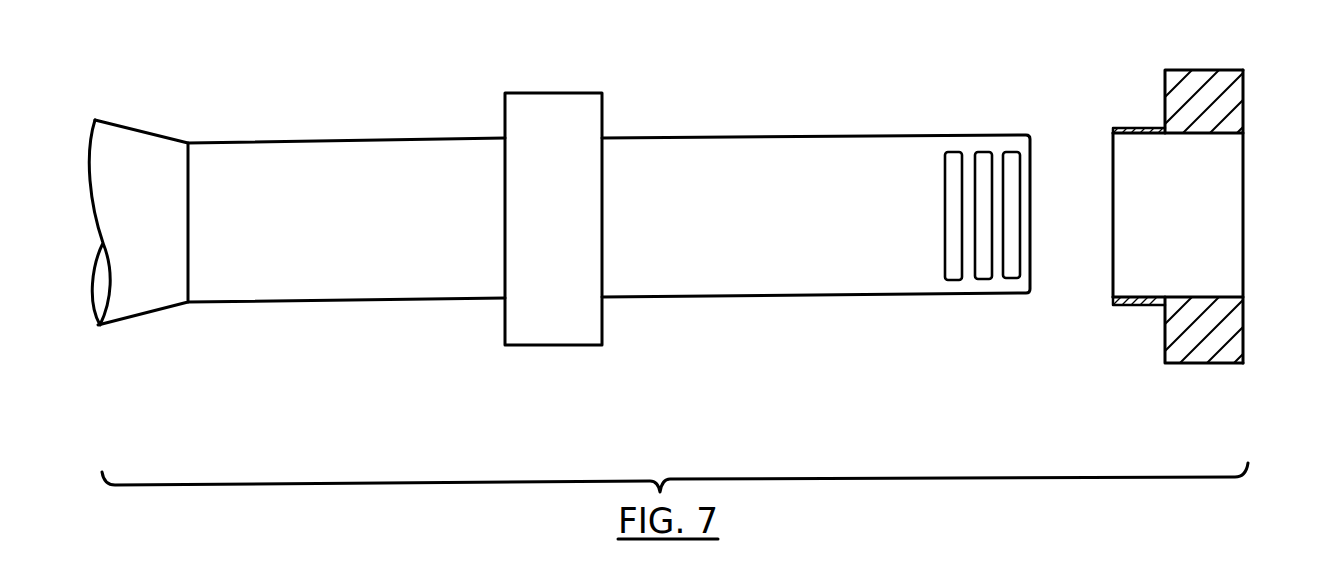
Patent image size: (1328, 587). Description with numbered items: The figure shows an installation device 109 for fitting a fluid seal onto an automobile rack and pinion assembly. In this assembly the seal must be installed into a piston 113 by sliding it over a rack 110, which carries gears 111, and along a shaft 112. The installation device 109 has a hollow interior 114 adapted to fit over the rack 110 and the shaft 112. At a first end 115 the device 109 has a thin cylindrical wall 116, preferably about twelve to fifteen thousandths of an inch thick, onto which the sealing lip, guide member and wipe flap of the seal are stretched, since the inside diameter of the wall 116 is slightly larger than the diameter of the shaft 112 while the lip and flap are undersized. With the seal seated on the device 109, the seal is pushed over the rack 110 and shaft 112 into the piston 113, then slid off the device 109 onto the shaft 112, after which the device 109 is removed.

The installation device 109 is at (1165, 373).
The rack 110 is at (967, 140).
The gears 111 is at (983, 279).
The shaft 112 is at (793, 136).
The piston 113 is at (562, 93).
The hollow interior 114 is at (1227, 230).
The first end 115 is at (1101, 264).
The cylindrical wall 116 is at (1140, 125).